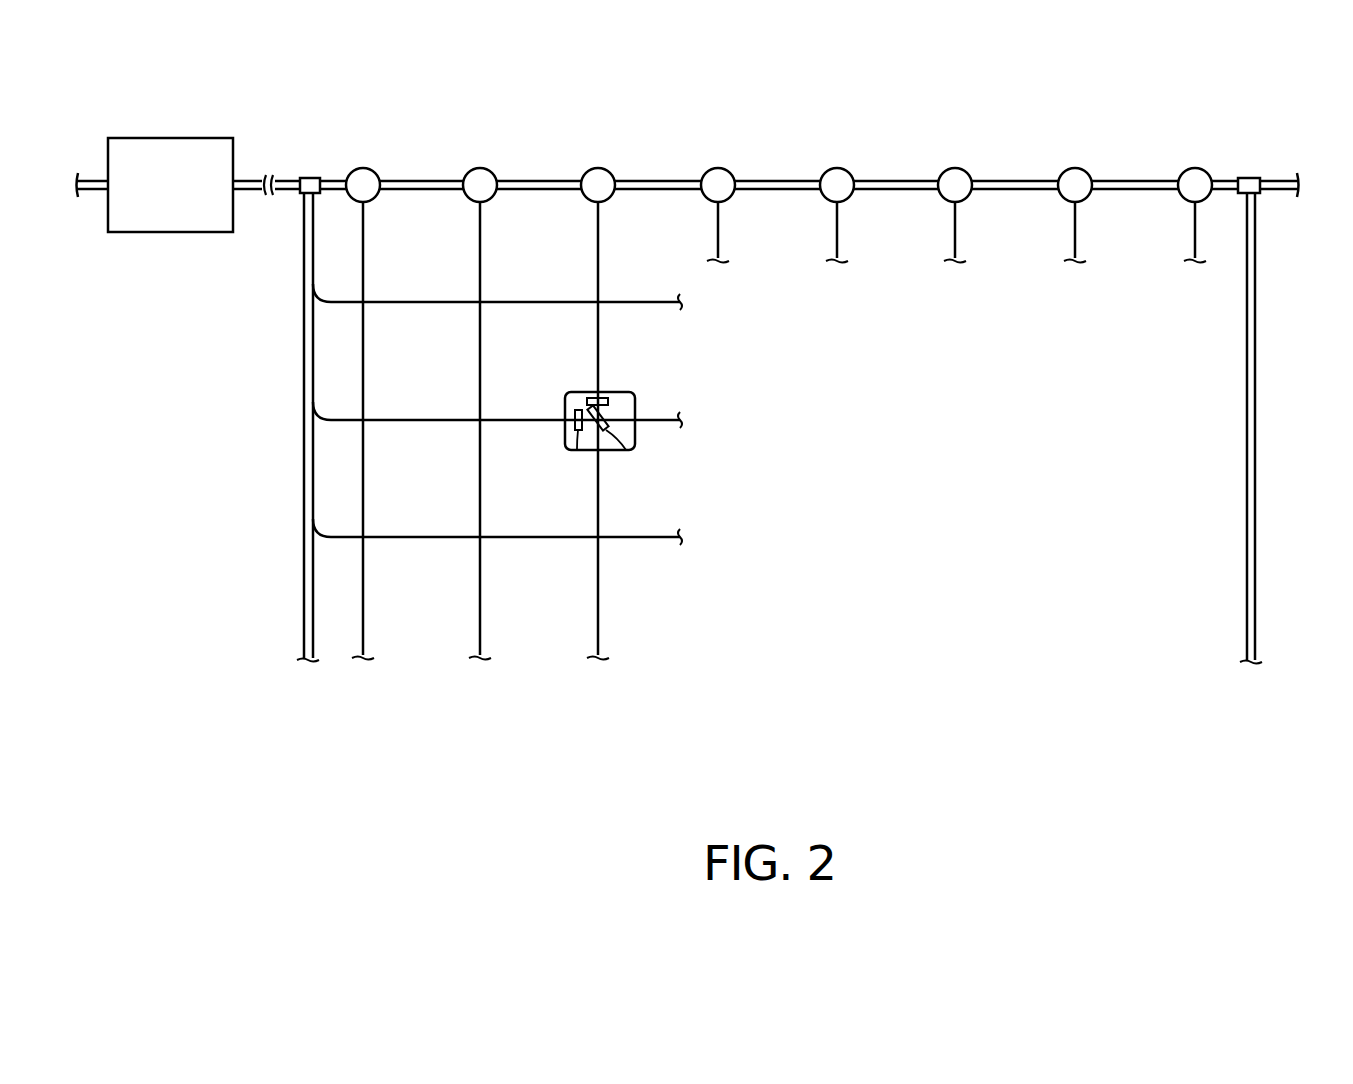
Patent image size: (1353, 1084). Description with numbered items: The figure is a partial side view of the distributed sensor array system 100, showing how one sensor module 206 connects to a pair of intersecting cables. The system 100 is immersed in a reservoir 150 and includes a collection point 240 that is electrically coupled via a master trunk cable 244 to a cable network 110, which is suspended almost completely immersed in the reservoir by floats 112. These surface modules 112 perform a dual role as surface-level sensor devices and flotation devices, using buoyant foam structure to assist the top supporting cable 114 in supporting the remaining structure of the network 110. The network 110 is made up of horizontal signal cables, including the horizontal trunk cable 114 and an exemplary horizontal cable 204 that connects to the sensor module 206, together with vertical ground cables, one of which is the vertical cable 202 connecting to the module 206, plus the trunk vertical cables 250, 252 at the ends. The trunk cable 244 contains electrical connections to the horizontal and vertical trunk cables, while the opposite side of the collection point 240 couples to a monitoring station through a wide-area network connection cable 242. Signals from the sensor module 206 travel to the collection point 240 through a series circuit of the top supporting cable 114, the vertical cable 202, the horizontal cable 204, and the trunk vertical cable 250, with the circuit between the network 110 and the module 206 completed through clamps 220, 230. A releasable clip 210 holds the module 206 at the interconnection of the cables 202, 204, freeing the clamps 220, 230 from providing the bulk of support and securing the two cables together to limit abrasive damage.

The distributed sensor array system 100 is at (304, 800).
The cable network 110 is at (1003, 142).
The surface module 112 is at (360, 168).
The top supporting cable 114 is at (542, 181).
The reservoir 150 is at (601, 760).
The vertical cable 202 is at (601, 243).
The horizontal cable 204 is at (404, 420).
The sensor module 206 is at (615, 392).
The releasable clip 210 is at (626, 450).
The clamp 220 is at (585, 398).
The clamp 230 is at (577, 448).
The collection point 240 is at (197, 233).
The wide-area network connection cable 242 is at (93, 192).
The master trunk cable 244 is at (261, 180).
The trunk vertical cable 250 is at (304, 450).
The trunk vertical cable 252 is at (1246, 452).